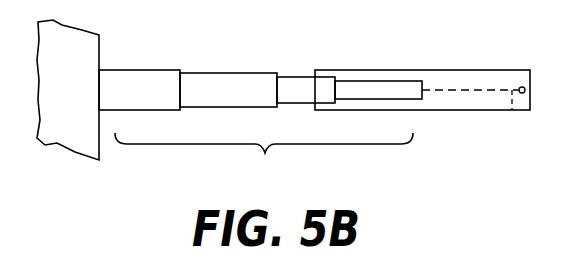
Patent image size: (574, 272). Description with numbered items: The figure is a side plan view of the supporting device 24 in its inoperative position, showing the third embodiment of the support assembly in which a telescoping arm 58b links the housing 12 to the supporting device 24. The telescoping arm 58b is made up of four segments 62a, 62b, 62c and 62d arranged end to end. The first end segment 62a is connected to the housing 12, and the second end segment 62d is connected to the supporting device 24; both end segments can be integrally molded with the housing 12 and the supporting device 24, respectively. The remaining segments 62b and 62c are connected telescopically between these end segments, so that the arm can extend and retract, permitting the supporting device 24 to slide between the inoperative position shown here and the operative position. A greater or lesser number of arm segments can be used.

The housing 12 is at (80, 98).
The supporting device 24 is at (487, 75).
The first end segment 62a is at (148, 100).
The arm segment 62b is at (236, 101).
The arm segment 62c is at (295, 88).
The second end segment 62d is at (378, 88).
The telescoping arm 58b is at (264, 160).